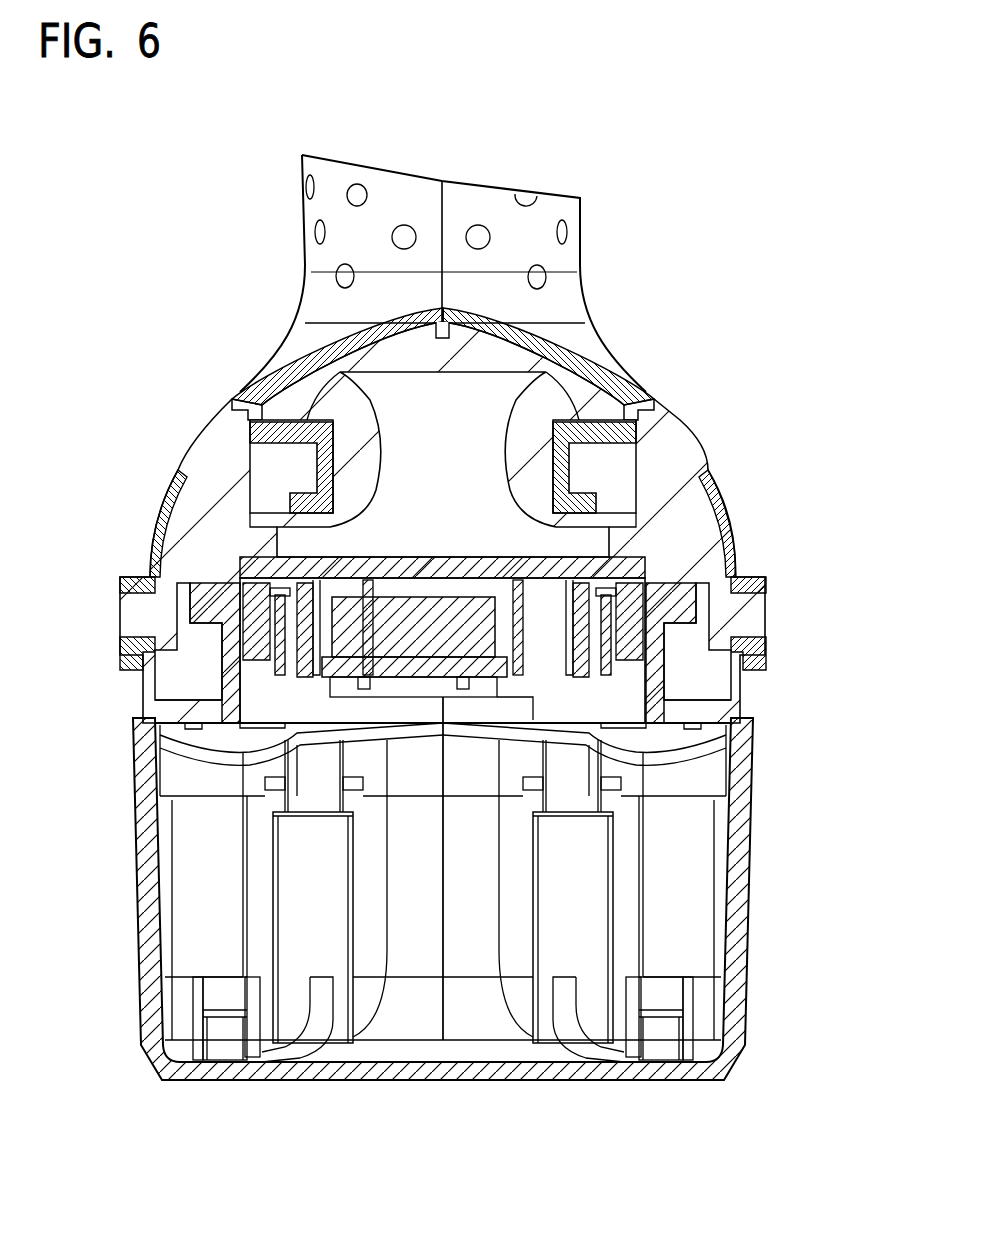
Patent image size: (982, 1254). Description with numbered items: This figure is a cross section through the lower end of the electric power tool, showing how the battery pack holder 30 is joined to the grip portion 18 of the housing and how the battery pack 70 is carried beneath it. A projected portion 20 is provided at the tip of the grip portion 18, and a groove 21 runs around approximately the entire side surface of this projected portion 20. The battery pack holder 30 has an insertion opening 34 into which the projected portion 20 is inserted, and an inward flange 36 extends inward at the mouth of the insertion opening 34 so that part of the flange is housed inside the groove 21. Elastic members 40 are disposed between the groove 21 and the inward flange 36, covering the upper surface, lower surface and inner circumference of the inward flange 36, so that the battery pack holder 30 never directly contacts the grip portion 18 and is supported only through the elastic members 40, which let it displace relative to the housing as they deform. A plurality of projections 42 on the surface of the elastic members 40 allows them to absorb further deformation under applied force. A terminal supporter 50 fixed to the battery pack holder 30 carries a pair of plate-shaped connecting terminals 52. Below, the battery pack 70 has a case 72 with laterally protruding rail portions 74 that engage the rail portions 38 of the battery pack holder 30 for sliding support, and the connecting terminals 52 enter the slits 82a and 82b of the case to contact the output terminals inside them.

The grip portion 18 is at (580, 220).
The projected portion 20 is at (495, 415).
The groove 21 is at (455, 447).
The battery pack holder 30 is at (198, 453).
The insertion opening 34 is at (280, 520).
The inward flange 36 is at (293, 458).
The rail portions 38 is at (200, 688).
The elastic members 40 is at (268, 363).
The projections 42 is at (250, 398).
The terminal supporter 50 is at (445, 575).
The connecting terminals 52 is at (315, 622).
The battery pack 70 is at (772, 892).
The case 72 is at (750, 977).
The rail portions 74 is at (201, 625).
The slit 82a is at (285, 742).
The slit 82b is at (601, 742).